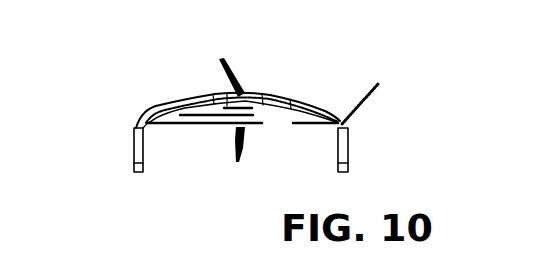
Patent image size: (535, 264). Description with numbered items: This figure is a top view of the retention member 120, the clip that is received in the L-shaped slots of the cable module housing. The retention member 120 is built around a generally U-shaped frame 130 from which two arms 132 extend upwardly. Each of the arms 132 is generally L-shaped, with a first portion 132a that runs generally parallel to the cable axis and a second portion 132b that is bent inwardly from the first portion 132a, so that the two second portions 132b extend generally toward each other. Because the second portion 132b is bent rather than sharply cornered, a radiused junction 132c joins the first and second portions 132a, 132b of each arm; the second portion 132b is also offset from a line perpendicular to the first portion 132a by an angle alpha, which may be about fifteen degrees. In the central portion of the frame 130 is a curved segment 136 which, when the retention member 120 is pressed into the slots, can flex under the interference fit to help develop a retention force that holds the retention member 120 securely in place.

The retention member 120 is at (240, 117).
The frame 130 is at (204, 106).
The arms 132 is at (134, 134).
The first portion 132a is at (135, 153).
The second portion 132b is at (178, 105).
The radiused junction 132c is at (386, 98).
The curved segment 136 is at (245, 107).